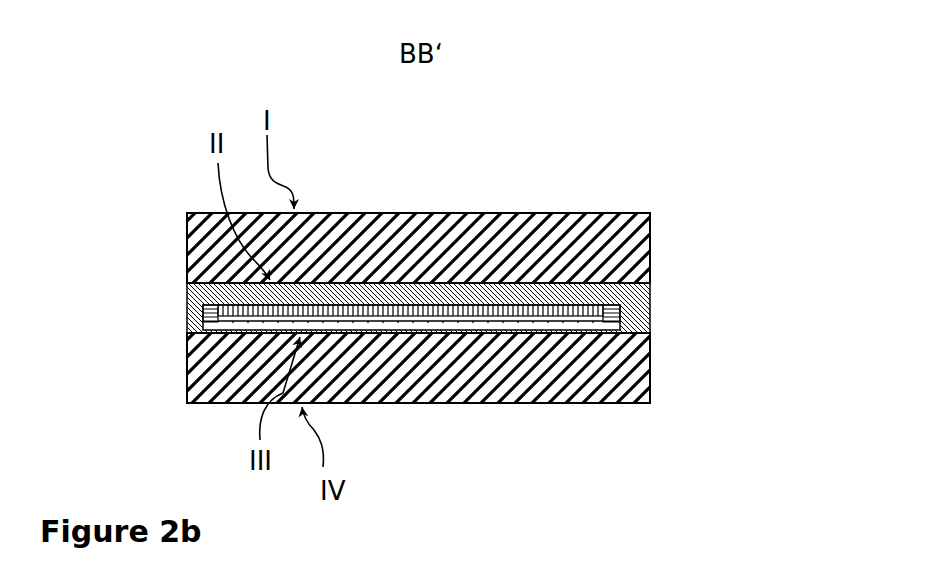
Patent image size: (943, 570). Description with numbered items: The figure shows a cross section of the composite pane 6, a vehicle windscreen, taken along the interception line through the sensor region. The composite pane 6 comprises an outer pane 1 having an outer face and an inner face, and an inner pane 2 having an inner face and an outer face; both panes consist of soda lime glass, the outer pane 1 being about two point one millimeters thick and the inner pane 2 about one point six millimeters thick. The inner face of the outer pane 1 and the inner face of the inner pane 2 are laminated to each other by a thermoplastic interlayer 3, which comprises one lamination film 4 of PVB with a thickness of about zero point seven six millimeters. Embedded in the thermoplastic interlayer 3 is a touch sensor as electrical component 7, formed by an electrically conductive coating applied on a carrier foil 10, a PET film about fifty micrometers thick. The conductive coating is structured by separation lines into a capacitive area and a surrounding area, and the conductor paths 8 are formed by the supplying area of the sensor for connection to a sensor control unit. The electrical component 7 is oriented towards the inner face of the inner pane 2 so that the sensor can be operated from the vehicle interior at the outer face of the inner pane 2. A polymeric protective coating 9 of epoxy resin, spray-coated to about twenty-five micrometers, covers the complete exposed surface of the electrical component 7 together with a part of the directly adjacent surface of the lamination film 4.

The outer pane 1 is at (620, 248).
The inner pane 2 is at (640, 352).
The thermoplastic interlayer 3 is at (416, 381).
The lamination film 4 is at (205, 295).
The composite pane 6 is at (577, 154).
The electrical component 7 is at (410, 400).
The conductor paths 8 is at (437, 321).
The polymeric protective coating 9 is at (610, 318).
The carrier foil 10 is at (502, 310).